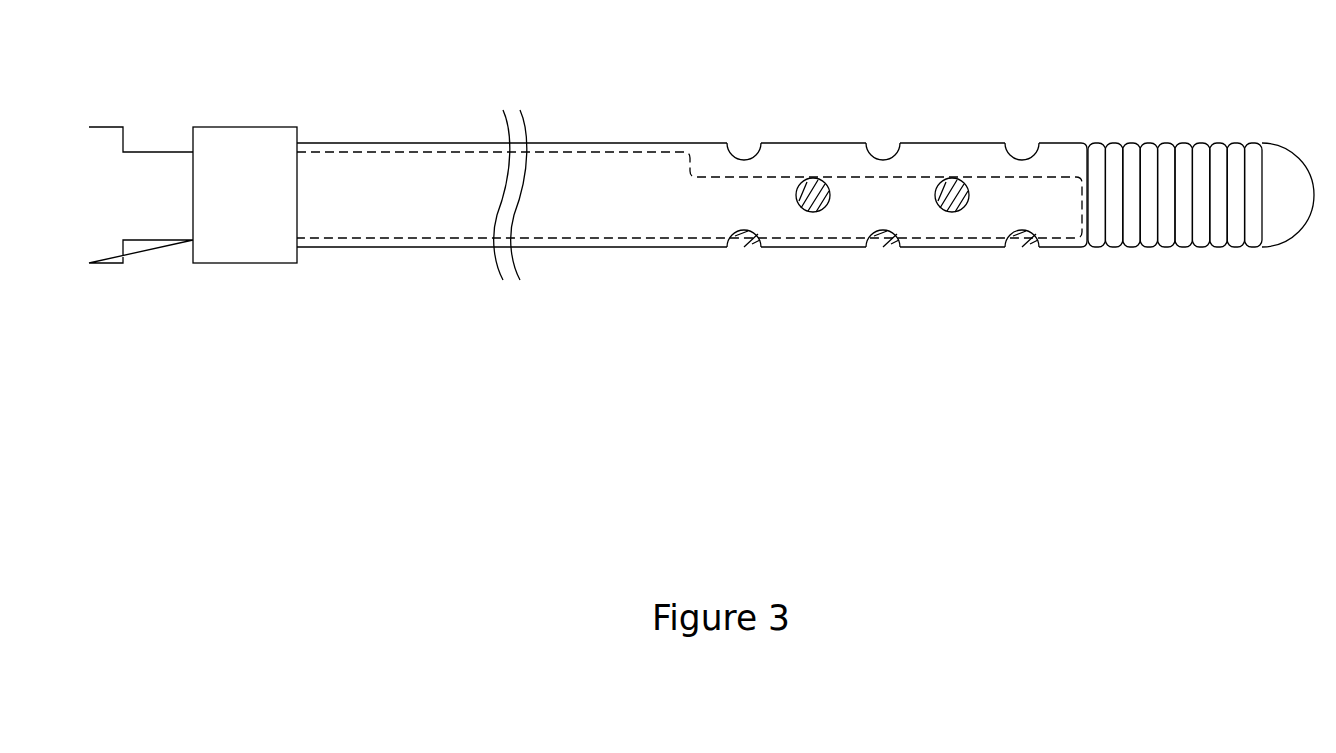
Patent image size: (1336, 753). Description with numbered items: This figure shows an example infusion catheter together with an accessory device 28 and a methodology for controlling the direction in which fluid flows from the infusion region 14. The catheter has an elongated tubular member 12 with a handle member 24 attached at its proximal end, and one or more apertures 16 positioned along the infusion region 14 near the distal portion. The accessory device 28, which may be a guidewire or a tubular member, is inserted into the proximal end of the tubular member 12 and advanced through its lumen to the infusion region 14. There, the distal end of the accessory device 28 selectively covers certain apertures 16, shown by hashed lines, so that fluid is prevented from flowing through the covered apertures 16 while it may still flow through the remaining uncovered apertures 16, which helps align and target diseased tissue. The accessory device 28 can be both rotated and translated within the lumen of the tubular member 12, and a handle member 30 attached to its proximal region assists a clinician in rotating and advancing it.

The tubular member 12 is at (367, 143).
The infusion region 14 is at (955, 252).
The apertures 16 is at (745, 155).
The handle member 24 is at (245, 127).
The accessory device 28 is at (158, 241).
The handle member 30 is at (107, 125).